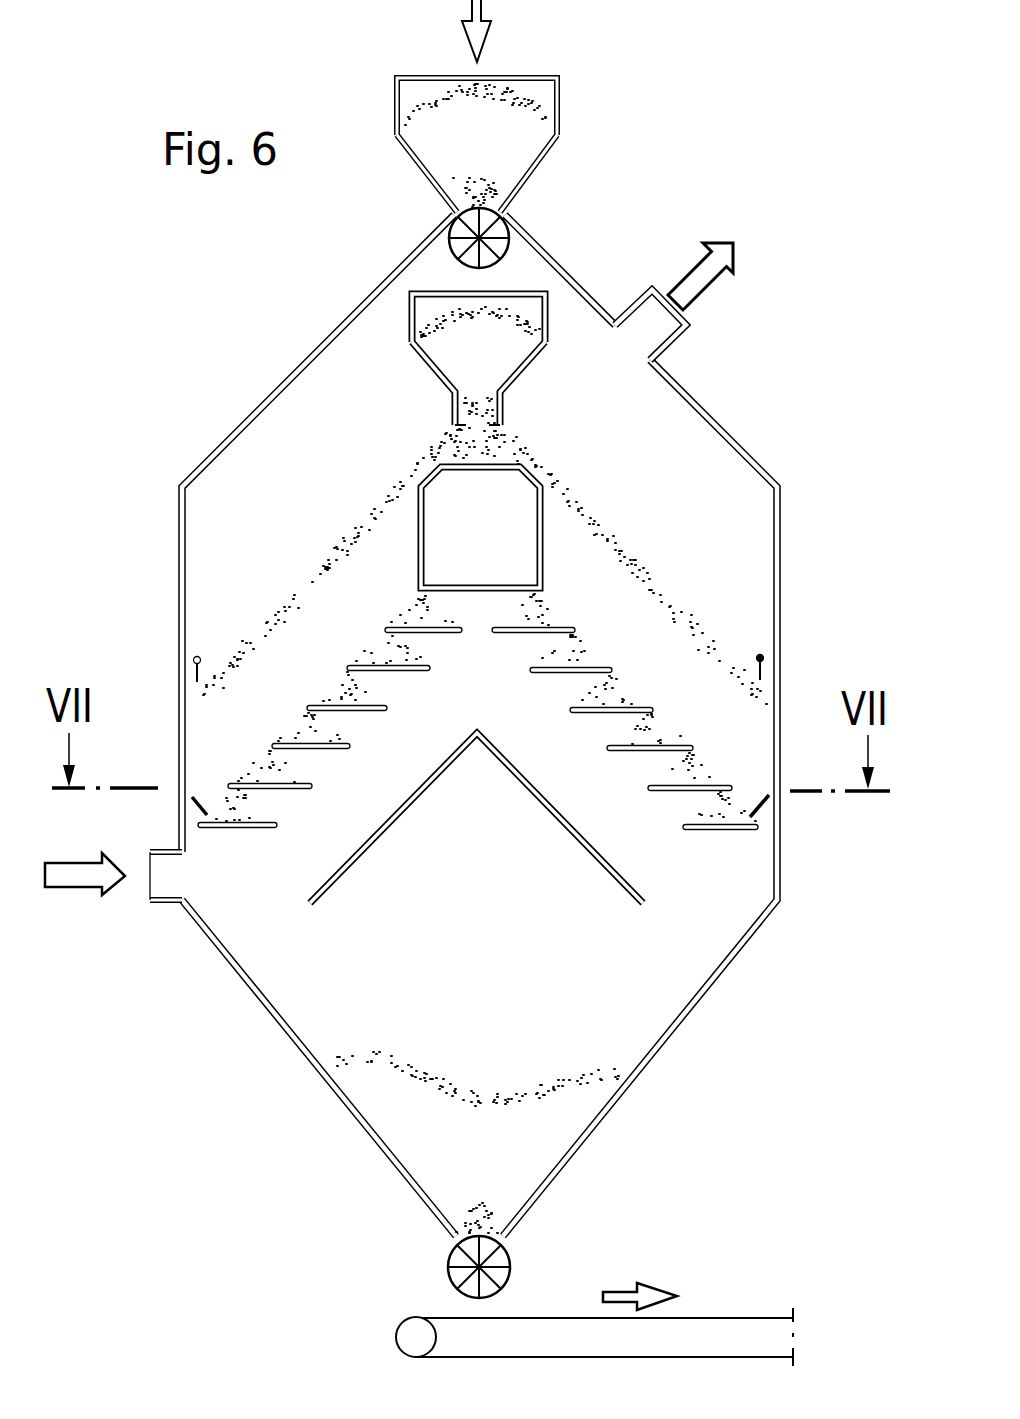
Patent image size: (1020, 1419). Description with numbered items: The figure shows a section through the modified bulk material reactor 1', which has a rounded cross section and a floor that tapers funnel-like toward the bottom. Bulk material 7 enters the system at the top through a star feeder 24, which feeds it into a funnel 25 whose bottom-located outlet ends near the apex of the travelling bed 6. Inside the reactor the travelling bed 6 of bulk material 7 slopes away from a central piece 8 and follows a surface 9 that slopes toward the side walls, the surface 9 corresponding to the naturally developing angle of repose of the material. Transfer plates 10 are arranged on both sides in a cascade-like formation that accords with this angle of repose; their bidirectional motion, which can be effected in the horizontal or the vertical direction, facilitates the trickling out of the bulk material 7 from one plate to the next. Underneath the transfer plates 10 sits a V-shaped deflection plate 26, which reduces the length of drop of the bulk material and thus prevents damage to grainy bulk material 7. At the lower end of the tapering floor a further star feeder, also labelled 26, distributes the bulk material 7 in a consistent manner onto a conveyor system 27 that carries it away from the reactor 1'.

The modified reactor 1' is at (490, 725).
The star feeder 24 is at (499, 228).
The funnel 25 is at (555, 297).
The bulk material 7 is at (445, 318).
The central piece 8 is at (484, 553).
The travelling bed 6 is at (582, 546).
The surface 9 is at (648, 574).
The transfer plates 10 is at (590, 718).
The V-shaped deflection plate 26 is at (571, 838).
The conveyor system 27 is at (718, 1316).